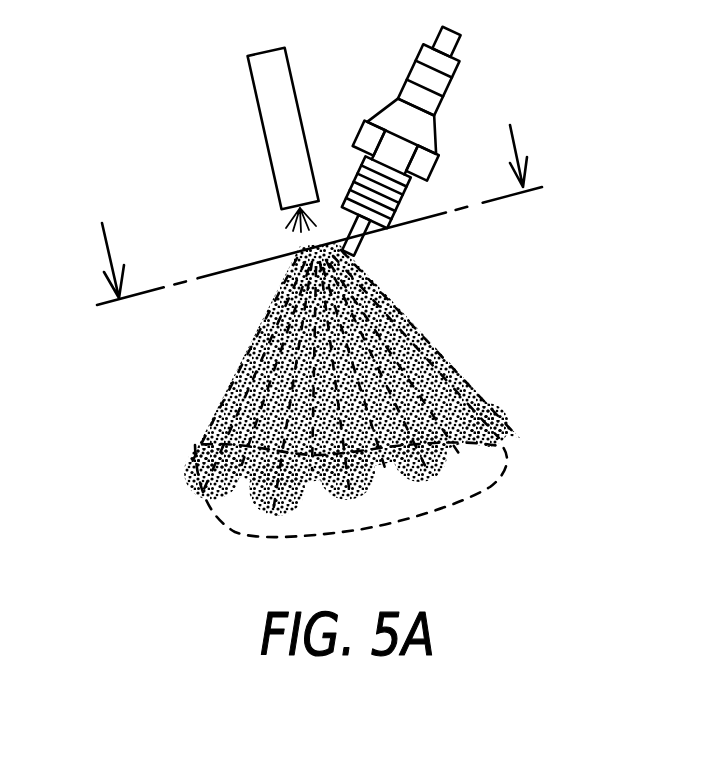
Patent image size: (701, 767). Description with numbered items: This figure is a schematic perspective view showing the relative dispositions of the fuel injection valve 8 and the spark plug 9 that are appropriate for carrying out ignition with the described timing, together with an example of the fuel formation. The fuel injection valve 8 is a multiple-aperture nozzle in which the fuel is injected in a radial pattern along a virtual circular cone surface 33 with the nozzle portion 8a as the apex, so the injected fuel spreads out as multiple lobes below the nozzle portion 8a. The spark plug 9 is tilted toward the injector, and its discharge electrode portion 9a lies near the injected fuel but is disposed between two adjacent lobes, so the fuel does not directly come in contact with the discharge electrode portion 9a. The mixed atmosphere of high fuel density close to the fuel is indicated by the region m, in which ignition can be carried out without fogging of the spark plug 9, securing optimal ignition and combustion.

The fuel injection valve 8 is at (253, 78).
The nozzle portion 8a is at (287, 222).
The spark plug 9 is at (454, 70).
The discharge electrode portion 9a is at (361, 243).
The virtual circular cone surface 33 is at (203, 442).
The air-fuel mixture m is at (508, 411).